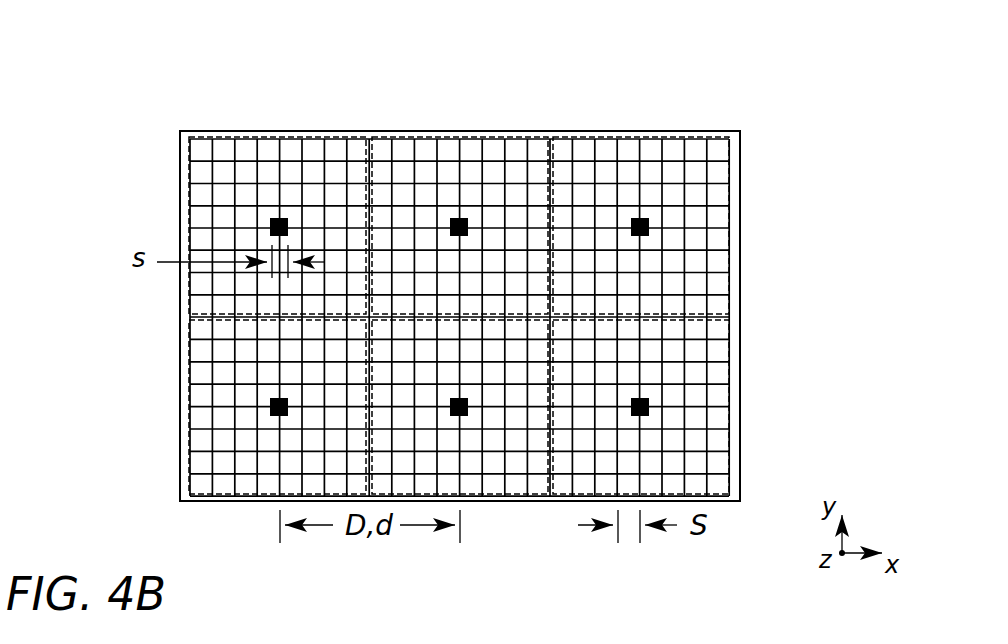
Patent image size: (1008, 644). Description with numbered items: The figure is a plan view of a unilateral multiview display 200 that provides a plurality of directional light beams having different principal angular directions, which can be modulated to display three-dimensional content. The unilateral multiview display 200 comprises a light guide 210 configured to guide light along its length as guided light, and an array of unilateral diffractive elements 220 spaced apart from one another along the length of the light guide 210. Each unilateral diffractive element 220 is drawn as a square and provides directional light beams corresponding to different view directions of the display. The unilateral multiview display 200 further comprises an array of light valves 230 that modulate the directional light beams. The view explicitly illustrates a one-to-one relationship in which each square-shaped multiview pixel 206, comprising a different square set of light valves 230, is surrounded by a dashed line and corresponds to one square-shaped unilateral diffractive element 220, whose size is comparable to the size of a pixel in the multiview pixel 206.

The unilateral multiview display 200 is at (751, 121).
The multiview pixel 206 is at (370, 124).
The light guide 210 is at (741, 316).
The unilateral diffractive element 220 is at (262, 226).
The light valve 230 is at (492, 148).